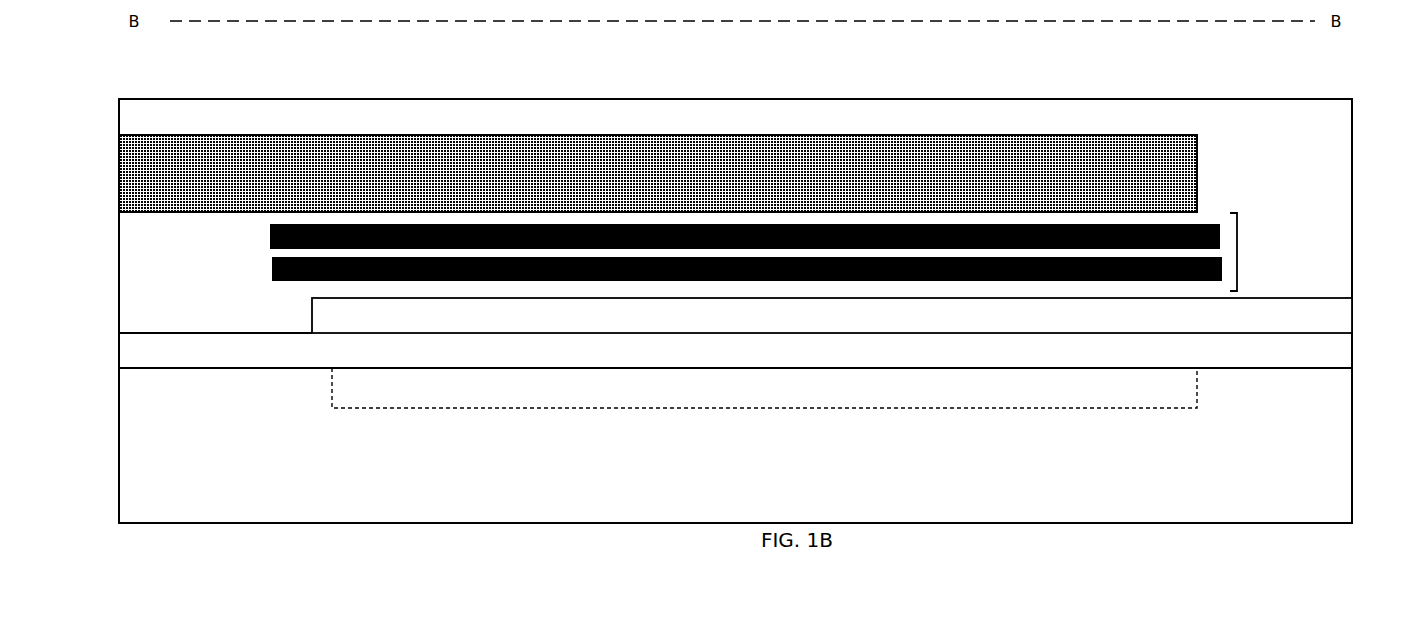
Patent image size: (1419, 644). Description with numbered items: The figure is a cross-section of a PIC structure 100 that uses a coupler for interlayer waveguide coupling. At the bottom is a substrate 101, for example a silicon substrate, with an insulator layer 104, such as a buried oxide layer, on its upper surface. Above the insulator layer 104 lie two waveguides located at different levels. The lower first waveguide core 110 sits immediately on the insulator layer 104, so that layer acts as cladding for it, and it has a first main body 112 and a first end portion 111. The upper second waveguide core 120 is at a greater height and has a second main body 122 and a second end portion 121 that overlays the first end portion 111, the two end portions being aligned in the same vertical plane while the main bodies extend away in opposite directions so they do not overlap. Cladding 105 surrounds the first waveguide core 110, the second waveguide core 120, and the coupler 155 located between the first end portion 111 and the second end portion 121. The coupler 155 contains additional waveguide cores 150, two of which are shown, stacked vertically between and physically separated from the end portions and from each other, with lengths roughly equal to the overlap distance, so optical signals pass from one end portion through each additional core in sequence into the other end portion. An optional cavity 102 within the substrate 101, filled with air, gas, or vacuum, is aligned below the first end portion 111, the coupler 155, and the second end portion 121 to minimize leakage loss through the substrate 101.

The PIC structure 100 is at (946, 87).
The substrate 101 is at (735, 445).
The cavity 102 is at (874, 409).
The insulator layer 104 is at (1352, 350).
The cladding 105 is at (1352, 214).
The first waveguide core 110 is at (794, 378).
The first end portion 111 is at (650, 317).
The first main body 112 is at (1303, 317).
The second waveguide core 120 is at (685, 139).
The second end portion 121 is at (993, 177).
The second main body 122 is at (196, 186).
The additional waveguide cores 150 is at (270, 237).
The coupler 155 is at (1237, 251).